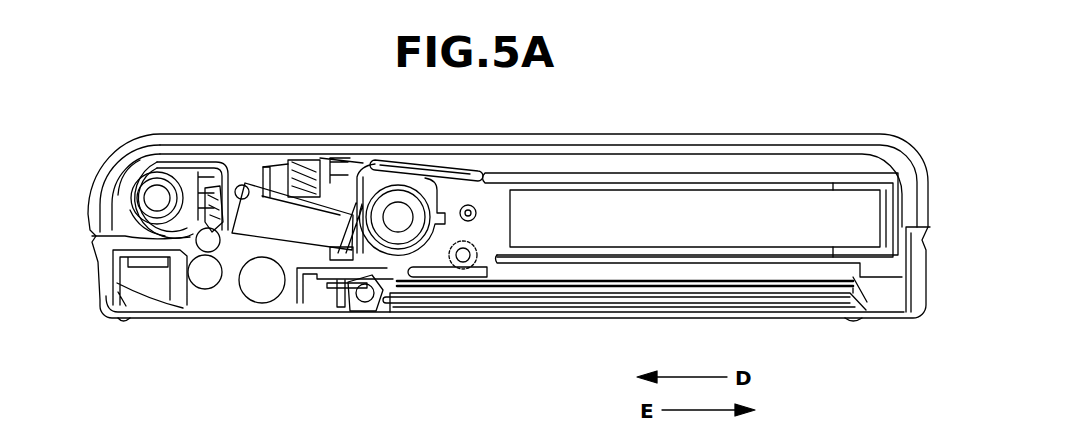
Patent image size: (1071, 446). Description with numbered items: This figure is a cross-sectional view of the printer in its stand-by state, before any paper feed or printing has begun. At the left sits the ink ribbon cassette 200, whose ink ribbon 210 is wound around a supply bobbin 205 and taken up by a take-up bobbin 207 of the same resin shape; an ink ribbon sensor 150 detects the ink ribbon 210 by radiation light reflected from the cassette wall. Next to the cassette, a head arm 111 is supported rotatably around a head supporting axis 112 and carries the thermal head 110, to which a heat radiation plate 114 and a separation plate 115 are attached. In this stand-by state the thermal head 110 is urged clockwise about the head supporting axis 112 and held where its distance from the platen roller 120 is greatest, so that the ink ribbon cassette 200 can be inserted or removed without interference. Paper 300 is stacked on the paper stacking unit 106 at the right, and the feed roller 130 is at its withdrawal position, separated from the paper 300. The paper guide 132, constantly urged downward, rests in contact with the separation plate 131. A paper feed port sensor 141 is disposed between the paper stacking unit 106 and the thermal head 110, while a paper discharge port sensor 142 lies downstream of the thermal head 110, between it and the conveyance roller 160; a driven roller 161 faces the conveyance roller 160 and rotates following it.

The paper stacking unit 106 is at (572, 292).
The thermal head 110 is at (275, 220).
The head arm 111 is at (361, 183).
The head supporting axis 112 is at (470, 207).
The heat radiation plate 114 is at (418, 180).
The separation plate 115 is at (228, 253).
The platen roller 120 is at (262, 290).
The feed roller 130 is at (478, 248).
The separation plate 131 is at (373, 295).
The paper guide 132 is at (304, 278).
The paper feed port sensor 141 is at (340, 282).
The paper discharge port sensor 142 is at (113, 234).
The ink ribbon sensor 150 is at (133, 210).
The conveyance roller 160 is at (203, 278).
The driven roller 161 is at (230, 228).
The ink ribbon cassette 200 is at (157, 198).
The supply bobbin 205 is at (400, 218).
The take-up bobbin 207 is at (118, 195).
The ink ribbon 210 is at (160, 163).
The paper 300 is at (497, 288).